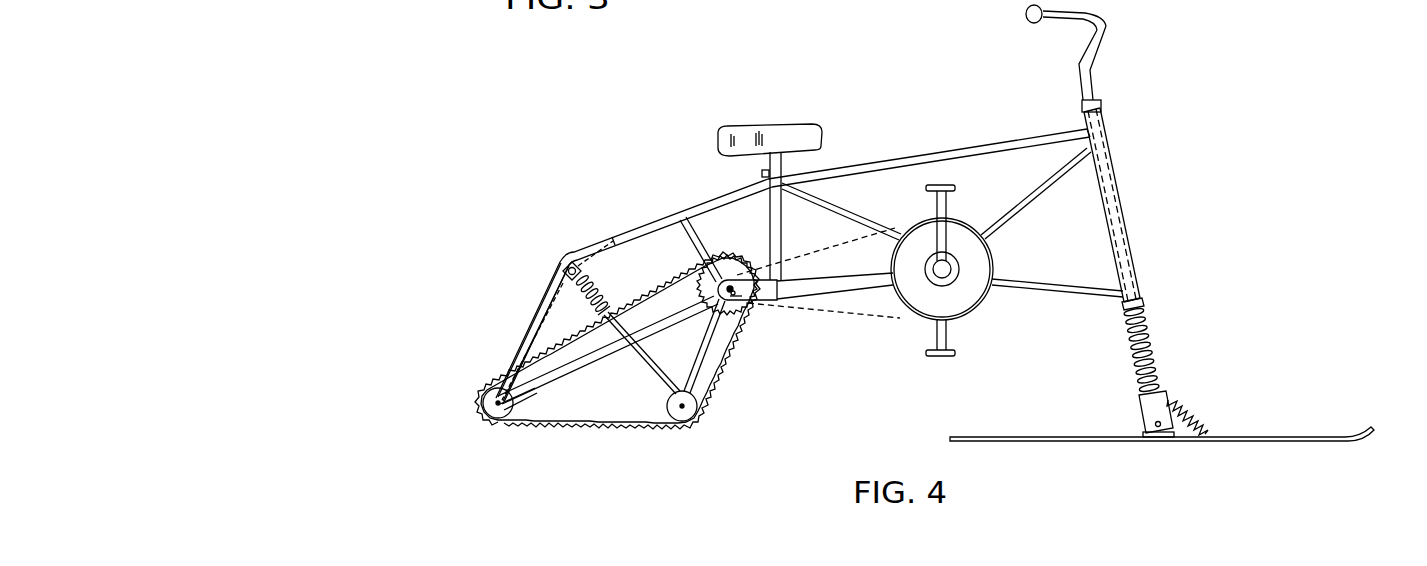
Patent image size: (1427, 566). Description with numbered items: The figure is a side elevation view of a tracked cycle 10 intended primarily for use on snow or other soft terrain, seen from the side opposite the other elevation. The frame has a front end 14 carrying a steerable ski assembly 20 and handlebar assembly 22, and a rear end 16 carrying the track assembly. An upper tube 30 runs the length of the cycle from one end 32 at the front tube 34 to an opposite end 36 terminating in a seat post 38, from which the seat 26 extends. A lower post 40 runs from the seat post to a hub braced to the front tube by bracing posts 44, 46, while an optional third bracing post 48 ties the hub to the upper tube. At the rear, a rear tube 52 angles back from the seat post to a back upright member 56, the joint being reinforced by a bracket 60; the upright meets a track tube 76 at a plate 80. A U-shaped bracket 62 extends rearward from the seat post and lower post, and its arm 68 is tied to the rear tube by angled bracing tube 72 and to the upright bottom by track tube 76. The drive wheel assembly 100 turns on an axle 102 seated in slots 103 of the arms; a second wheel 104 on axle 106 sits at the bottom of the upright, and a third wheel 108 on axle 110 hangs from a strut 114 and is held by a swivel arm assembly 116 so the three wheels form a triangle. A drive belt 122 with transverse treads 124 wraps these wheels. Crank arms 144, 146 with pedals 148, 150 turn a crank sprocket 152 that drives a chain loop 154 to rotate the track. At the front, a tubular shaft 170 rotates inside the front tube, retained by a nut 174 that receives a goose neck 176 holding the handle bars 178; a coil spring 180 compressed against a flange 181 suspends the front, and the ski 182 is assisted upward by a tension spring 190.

The tracked cycle 10 is at (606, 125).
The front end 14 is at (1258, 279).
The rear end 16 is at (512, 289).
The ski assembly 20 is at (1346, 389).
The handlebar assembly 22 is at (1138, 68).
The seat 26 is at (806, 134).
The upper tube 30 is at (971, 153).
The end of upper tube 32 is at (1085, 131).
The front tube 34 is at (1134, 181).
The opposite end of upper tube 36 is at (791, 180).
The seat post 38 is at (780, 208).
The lower post 40 is at (878, 283).
The bracing post 44 is at (1078, 288).
The bracing post 46 is at (1066, 165).
The third bracing post 48 is at (812, 208).
The rear tube 52 is at (660, 223).
The back upright member 56 is at (513, 357).
The bracket 60 is at (578, 255).
The U-shaped bracket 62 is at (794, 315).
The arm 68 is at (736, 308).
The angled bracing tube 72 is at (703, 285).
The track tube 76 is at (603, 360).
The bracket 80 is at (528, 389).
The drive wheel assembly 100 is at (738, 252).
The axle 102 is at (746, 316).
The slots 103 is at (690, 285).
The second wheel 104 is at (493, 415).
The axle 106 is at (498, 405).
The third wheel 108 is at (694, 408).
The axle 110 is at (675, 417).
The strut 114 is at (598, 273).
The swivel arm assembly 116 is at (702, 361).
The drive belt 122 is at (488, 387).
The treads 124 is at (588, 427).
The crank arm 144 is at (958, 328).
The crank arm 146 is at (950, 196).
The pedal 148 is at (926, 358).
The pedal 150 is at (946, 184).
The crank sprocket 152 is at (967, 295).
The chain loop 154 is at (860, 313).
The tubular shaft 170 is at (1128, 228).
The nut 174 is at (1102, 104).
The goose neck 176 is at (1080, 62).
The handle bars 178 is at (1108, 24).
The coil spring 180 is at (1163, 377).
The flange 181 is at (1142, 303).
The ski 182 is at (1050, 436).
The tension spring 190 is at (1200, 418).